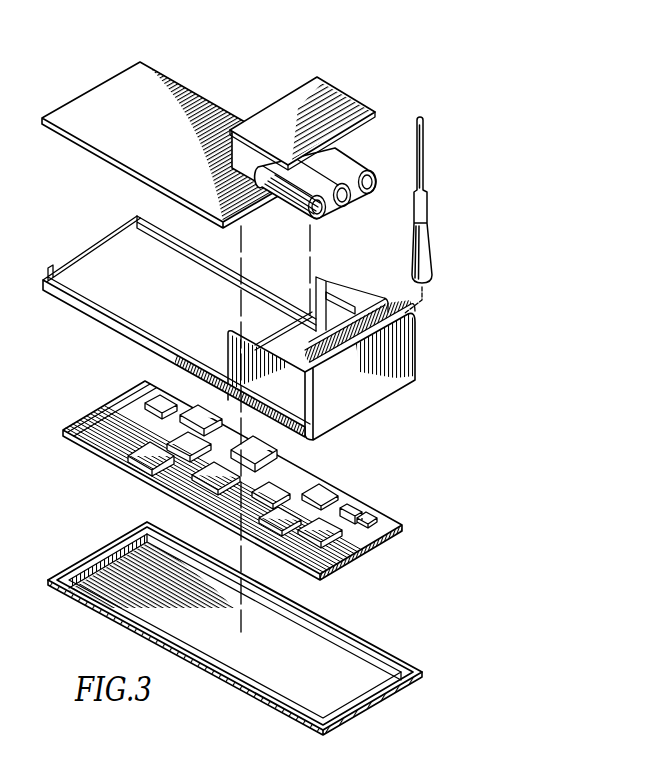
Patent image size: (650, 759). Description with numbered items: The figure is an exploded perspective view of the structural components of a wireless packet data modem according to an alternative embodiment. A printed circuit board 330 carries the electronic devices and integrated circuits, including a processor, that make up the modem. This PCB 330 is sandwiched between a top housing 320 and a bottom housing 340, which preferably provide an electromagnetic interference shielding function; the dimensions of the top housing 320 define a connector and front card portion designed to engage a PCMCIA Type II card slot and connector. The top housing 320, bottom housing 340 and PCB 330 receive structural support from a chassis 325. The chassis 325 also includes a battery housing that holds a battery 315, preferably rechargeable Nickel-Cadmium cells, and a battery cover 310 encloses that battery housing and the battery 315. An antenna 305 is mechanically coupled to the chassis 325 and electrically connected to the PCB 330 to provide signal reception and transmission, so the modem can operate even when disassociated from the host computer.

The antenna 305 is at (417, 158).
The battery cover 310 is at (327, 90).
The battery 315 is at (342, 166).
The top housing 320 is at (163, 80).
The chassis 325 is at (413, 363).
The printed circuit board 330 is at (110, 412).
The bottom housing 340 is at (110, 563).